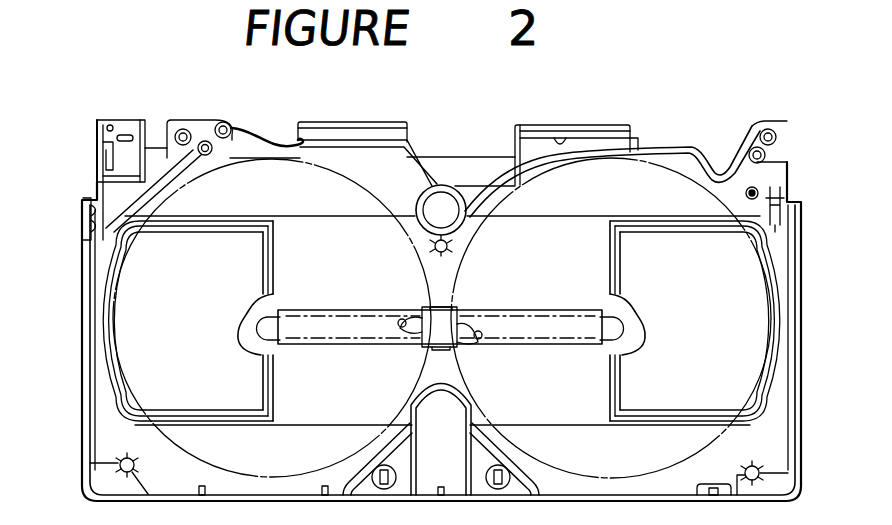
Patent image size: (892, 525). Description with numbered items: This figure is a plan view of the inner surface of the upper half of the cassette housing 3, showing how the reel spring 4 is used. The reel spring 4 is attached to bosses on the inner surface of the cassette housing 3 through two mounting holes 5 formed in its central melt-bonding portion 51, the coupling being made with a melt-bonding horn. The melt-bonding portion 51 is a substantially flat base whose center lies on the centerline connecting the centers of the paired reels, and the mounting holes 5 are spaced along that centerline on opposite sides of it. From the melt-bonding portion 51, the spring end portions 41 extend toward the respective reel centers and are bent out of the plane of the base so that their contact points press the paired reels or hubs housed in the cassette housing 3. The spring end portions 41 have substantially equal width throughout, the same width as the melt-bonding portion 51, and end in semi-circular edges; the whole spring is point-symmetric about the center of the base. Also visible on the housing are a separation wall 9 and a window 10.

The cassette housing 3 is at (770, 432).
The reel spring 4 is at (360, 342).
The spring end portions 41 is at (556, 330).
The mounting holes 5 is at (397, 318).
The melt-bonding portion 51 is at (438, 307).
The separation wall 9 is at (460, 405).
The window 10 is at (137, 361).